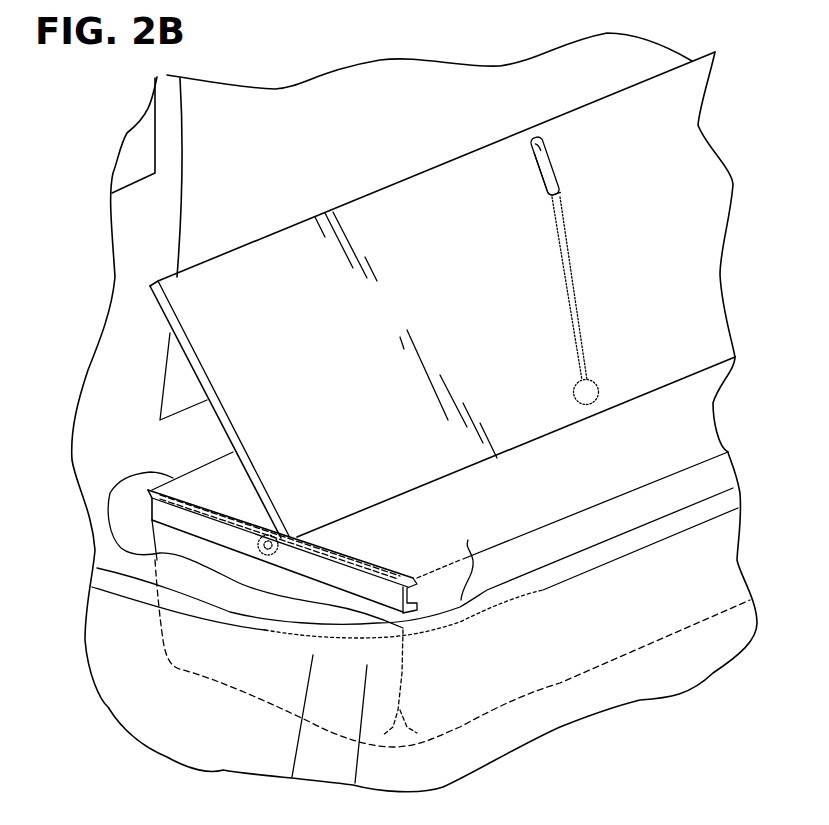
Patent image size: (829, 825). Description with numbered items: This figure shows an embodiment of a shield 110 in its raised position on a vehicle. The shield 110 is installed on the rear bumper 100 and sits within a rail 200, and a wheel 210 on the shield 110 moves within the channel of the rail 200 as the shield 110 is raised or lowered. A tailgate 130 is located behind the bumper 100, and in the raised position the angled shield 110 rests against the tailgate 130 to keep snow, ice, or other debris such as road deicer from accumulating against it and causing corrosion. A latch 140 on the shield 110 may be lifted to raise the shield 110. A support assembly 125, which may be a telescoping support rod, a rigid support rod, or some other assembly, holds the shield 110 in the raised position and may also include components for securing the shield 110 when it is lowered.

The rear bumper 100 is at (605, 687).
The shield 110 is at (397, 208).
The support assembly 125 is at (577, 307).
The tailgate 130 is at (233, 207).
The latch 140 is at (525, 136).
The rail 200 is at (388, 598).
The wheel 210 is at (263, 555).